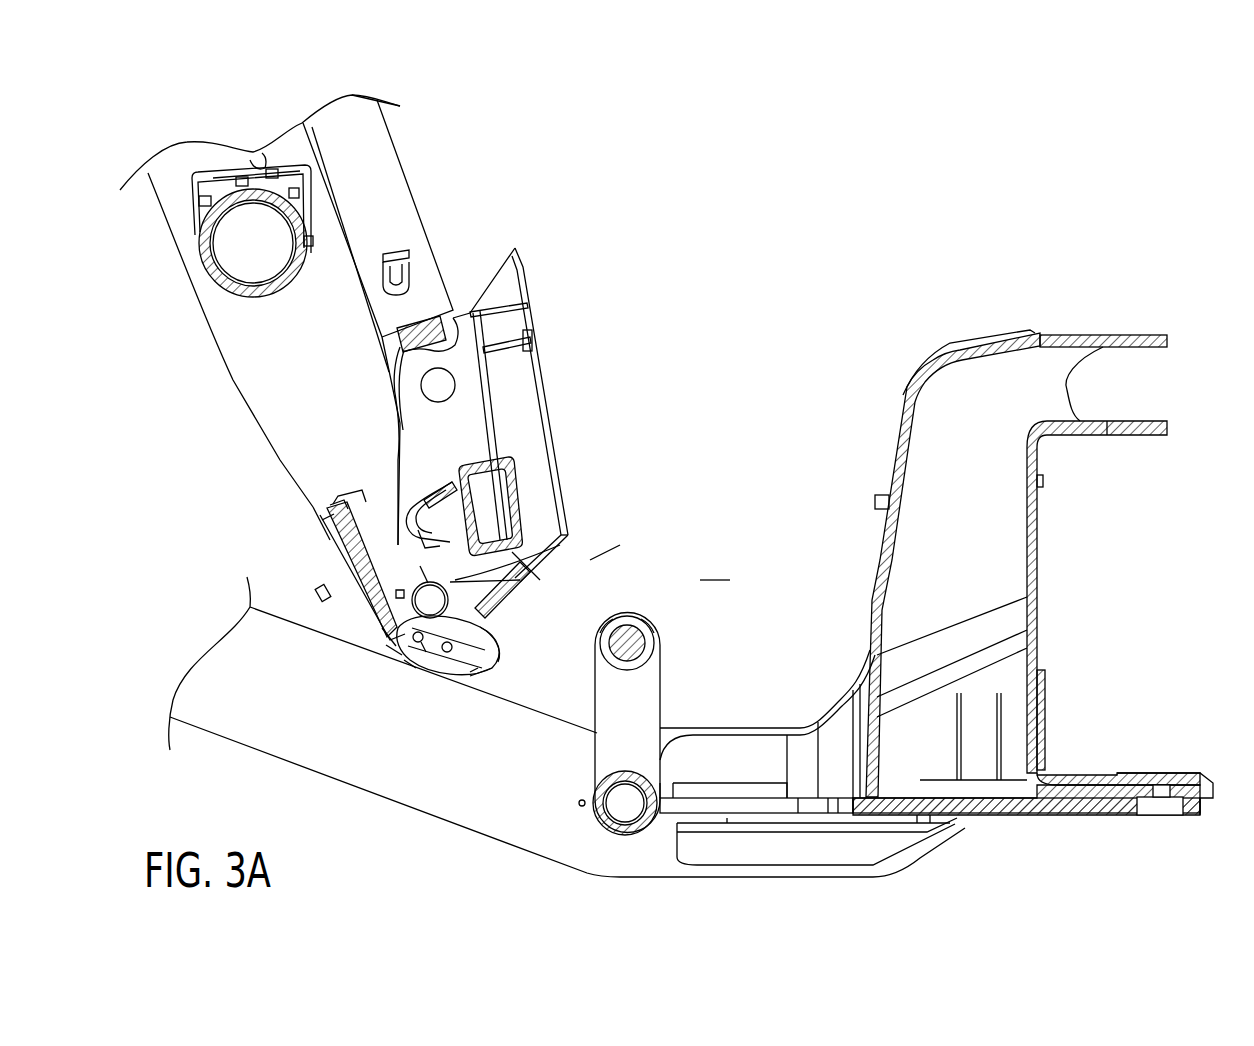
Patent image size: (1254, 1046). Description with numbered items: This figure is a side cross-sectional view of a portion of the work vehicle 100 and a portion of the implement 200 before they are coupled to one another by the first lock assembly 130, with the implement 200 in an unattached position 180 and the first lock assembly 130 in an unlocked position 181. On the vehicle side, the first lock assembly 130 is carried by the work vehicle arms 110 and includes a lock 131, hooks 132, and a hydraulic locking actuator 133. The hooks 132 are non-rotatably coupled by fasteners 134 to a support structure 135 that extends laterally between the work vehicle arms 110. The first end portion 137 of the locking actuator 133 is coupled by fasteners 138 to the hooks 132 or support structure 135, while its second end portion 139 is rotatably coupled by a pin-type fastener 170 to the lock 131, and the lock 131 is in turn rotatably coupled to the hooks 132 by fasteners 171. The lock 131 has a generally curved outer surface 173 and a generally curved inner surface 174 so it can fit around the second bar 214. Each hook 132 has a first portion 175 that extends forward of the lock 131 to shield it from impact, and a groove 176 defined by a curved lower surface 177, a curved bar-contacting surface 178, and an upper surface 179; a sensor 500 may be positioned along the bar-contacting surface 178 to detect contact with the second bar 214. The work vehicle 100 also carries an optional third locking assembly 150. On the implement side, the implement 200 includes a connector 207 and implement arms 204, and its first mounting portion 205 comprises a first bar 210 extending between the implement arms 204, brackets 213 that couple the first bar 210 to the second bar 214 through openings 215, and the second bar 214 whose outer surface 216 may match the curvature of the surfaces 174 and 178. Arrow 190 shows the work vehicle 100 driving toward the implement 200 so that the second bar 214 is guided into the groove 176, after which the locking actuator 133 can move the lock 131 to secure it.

The work vehicle 100 is at (492, 211).
The work vehicle arms 110 is at (285, 443).
The first lock assembly 130 is at (668, 510).
The lock 131 is at (472, 640).
The hook 132 is at (500, 660).
The locking actuator 133 is at (347, 580).
The fastener 134 is at (452, 485).
The support structure 135 is at (432, 486).
The first end portion 137 is at (322, 522).
The fastener 138 is at (327, 510).
The second end portion 139 is at (387, 632).
The third locking assembly 150 is at (576, 440).
The fastener 170 is at (395, 640).
The fastener 171 is at (404, 660).
The curved outer surface 173 is at (471, 672).
The curved inner surface 174 is at (421, 648).
The first portion 175 is at (470, 661).
The groove 176 is at (470, 588).
The curved lower surface 177 is at (496, 608).
The curved bar-contacting surface 178 is at (418, 585).
The upper surface 179 is at (566, 540).
The unattached position 180 is at (941, 849).
The unlocked position 181 is at (657, 532).
The arrow 190 is at (730, 577).
The implement 200 is at (936, 599).
The implement arms 204 is at (819, 880).
The first mounting portion 205 is at (673, 631).
The connector 207 is at (920, 440).
The first bar 210 is at (618, 808).
The bracket 213 is at (629, 703).
The second bar 214 is at (613, 630).
The opening 215 is at (647, 628).
The outer surface 216 is at (645, 648).
The sensor 500 is at (397, 588).